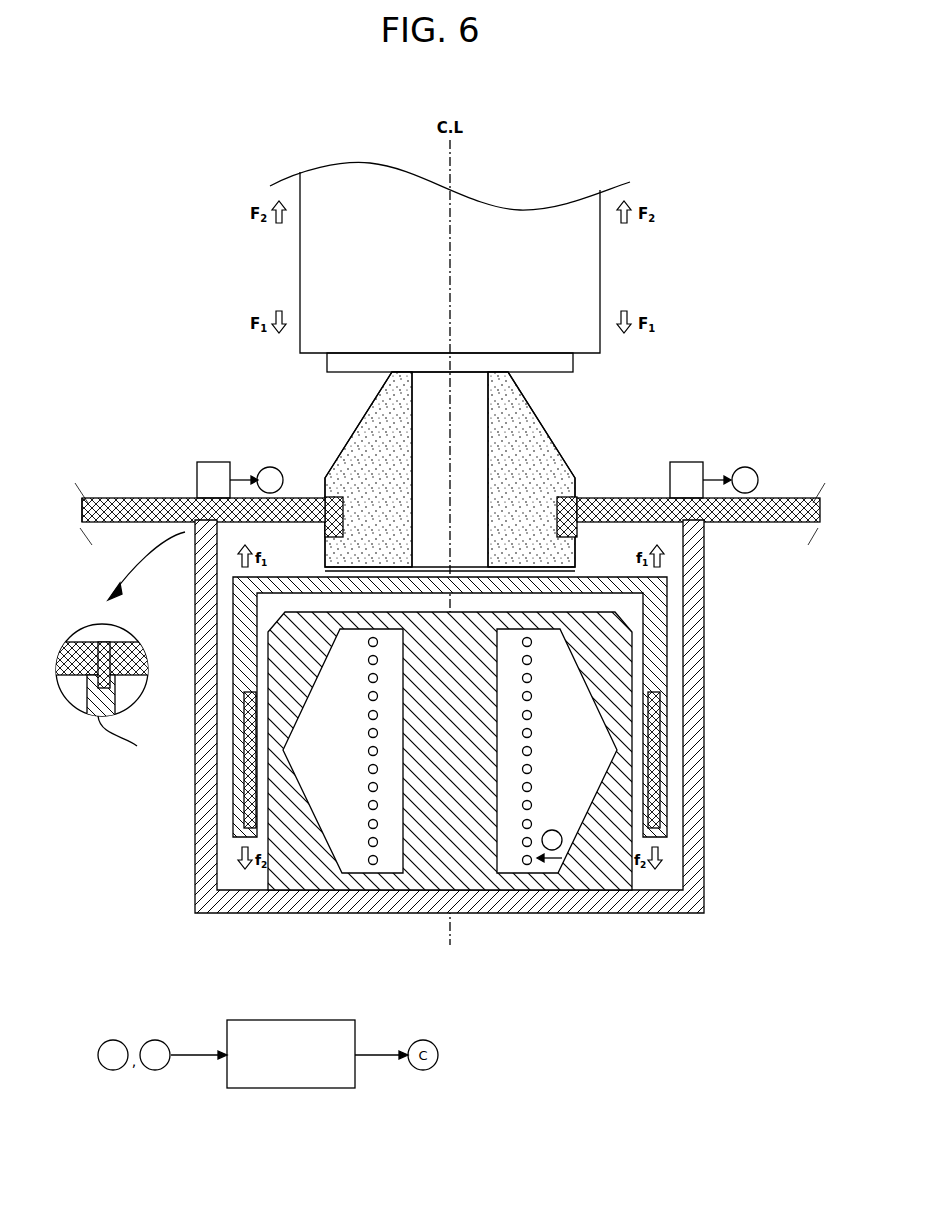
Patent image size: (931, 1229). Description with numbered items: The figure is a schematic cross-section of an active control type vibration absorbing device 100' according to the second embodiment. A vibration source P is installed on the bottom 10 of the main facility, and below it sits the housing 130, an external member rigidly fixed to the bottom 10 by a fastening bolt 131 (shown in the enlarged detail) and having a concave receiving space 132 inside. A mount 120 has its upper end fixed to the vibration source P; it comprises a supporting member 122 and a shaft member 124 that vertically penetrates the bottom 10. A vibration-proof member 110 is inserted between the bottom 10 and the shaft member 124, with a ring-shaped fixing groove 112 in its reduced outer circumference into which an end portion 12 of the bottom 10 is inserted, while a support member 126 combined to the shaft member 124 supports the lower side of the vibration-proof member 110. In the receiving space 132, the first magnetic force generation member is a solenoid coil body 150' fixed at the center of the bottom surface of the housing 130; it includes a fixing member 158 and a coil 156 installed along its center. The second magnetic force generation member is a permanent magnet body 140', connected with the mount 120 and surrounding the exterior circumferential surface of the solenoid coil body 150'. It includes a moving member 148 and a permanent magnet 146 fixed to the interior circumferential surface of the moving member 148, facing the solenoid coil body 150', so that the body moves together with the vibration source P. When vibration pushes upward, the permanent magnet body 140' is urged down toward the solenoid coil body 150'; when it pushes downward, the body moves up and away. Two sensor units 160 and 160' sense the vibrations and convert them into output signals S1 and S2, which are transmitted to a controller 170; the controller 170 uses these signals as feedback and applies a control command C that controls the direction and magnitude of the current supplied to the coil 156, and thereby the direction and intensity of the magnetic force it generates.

The vibration absorbing device 100' is at (395, 571).
The vibration source P is at (590, 257).
The bottom 10 is at (806, 498).
The end portion 12 is at (580, 530).
The vibration-proof member 110 is at (520, 388).
The fixing groove 112 is at (548, 480).
The mount 120 is at (228, 355).
The supporting member 122 is at (327, 360).
The shaft member 124 is at (420, 425).
The support member 126 is at (677, 592).
The housing 130 is at (200, 753).
The fastening bolt 131 is at (96, 642).
The receiving space 132 is at (233, 870).
The permanent magnet body 140' is at (736, 707).
The permanent magnet 146 is at (245, 790).
The moving member 148 is at (685, 650).
The solenoid coil body 150' is at (521, 816).
The coil 156 is at (520, 828).
The fixing member 158 is at (612, 890).
The sensor unit 160 is at (714, 453).
The sensor unit 160' is at (201, 478).
The controller 170 is at (245, 1020).
The control command C is at (549, 846).
The output signal S1 is at (113, 1055).
The output signal S2 is at (155, 1055).